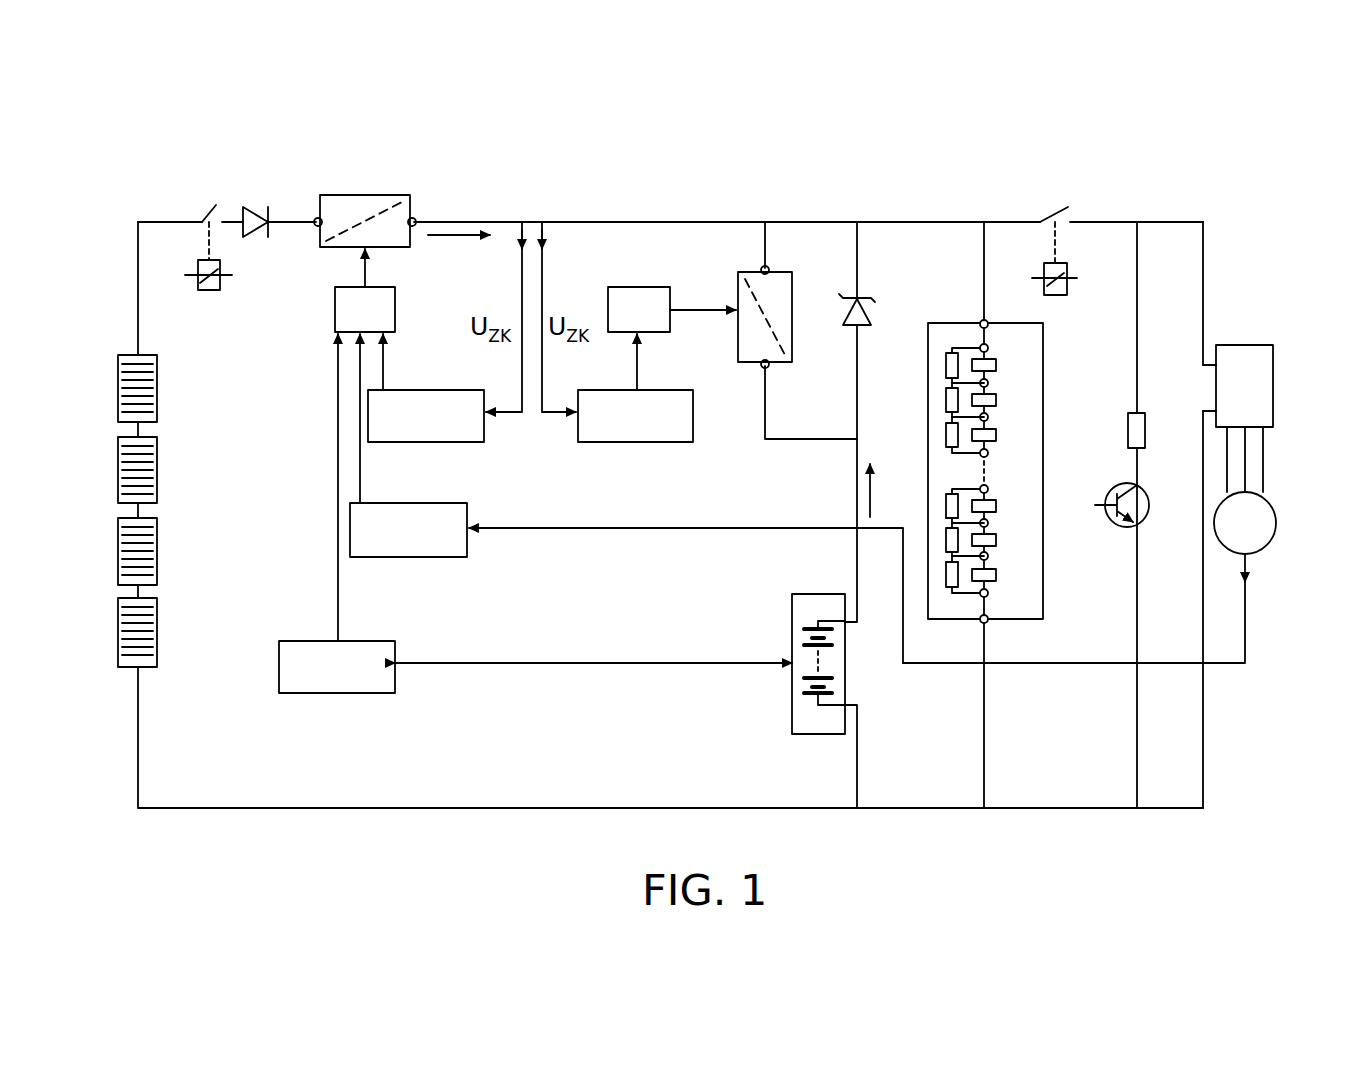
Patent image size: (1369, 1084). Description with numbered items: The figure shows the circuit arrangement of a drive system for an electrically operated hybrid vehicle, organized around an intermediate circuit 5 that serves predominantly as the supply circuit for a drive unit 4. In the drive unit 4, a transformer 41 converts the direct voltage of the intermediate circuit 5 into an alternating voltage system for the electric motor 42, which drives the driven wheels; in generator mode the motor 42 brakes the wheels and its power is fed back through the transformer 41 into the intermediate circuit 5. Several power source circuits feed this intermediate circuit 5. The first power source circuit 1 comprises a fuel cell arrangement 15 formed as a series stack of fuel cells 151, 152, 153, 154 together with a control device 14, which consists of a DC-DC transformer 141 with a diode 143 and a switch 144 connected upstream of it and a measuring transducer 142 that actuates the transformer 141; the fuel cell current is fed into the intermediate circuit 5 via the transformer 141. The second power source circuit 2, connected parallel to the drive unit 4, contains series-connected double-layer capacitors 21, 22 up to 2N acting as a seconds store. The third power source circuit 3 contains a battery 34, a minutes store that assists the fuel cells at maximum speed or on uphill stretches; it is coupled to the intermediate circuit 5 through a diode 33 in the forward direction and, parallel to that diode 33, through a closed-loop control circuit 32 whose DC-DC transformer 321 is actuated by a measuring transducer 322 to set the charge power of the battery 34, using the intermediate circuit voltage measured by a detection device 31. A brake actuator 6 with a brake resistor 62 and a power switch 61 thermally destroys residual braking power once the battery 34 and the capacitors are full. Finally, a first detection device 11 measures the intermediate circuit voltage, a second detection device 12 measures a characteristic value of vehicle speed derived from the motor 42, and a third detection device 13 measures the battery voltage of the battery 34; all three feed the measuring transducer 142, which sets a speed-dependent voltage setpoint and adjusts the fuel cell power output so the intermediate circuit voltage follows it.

The first power source circuit 1 is at (118, 166).
The second power source circuit 2 is at (958, 328).
The double-layer capacitor 21 is at (990, 365).
The double-layer capacitor 22 is at (990, 402).
The double-layer capacitor 2N is at (992, 572).
The third power source circuit 3 is at (790, 488).
The detection device 31 is at (660, 388).
The closed-loop control circuit 32 is at (713, 387).
The DC-DC transformer 321 is at (736, 284).
The measuring transducer 322 is at (638, 286).
The diode 33 is at (850, 310).
The battery 34 is at (818, 736).
The drive unit 4 is at (1262, 332).
The transformer 41 is at (1273, 378).
The electric motor 42 is at (1276, 520).
The intermediate circuit 5 is at (907, 212).
The brake actuator 6 is at (1128, 418).
The power switch 61 is at (1145, 497).
The brake resistor 62 is at (1146, 413).
The first detection device 11 is at (421, 388).
The second detection device 12 is at (423, 501).
The third detection device 13 is at (337, 695).
The control device 14 is at (305, 268).
The DC-DC transformer 141 is at (412, 210).
The measuring transducer 142 is at (333, 312).
The diode 143 is at (260, 212).
The switch 144 is at (208, 212).
The fuel cell arrangement 15 is at (210, 490).
The fuel cell 151 is at (157, 386).
The fuel cell 152 is at (157, 468).
The fuel cell 153 is at (157, 549).
The fuel cell 154 is at (157, 630).